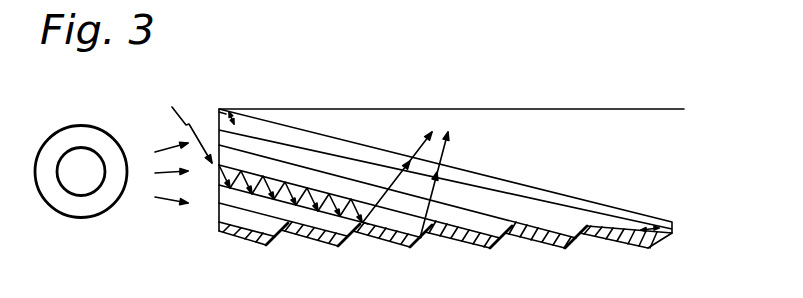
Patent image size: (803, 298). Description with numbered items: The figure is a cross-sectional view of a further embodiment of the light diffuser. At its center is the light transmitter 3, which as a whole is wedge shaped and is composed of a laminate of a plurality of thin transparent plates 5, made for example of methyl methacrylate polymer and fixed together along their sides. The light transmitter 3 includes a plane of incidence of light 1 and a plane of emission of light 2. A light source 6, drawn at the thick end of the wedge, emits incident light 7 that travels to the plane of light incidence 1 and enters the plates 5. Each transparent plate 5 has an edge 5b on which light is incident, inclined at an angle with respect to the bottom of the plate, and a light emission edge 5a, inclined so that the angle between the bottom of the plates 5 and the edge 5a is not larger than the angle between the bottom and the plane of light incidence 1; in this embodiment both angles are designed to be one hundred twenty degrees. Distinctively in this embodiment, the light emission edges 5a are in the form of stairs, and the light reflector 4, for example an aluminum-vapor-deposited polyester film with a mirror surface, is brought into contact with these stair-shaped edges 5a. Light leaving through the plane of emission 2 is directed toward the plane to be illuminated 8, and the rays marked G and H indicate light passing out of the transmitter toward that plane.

The plane of incidence of light 1 is at (186, 125).
The plane of emission of light 2 is at (608, 105).
The light transmitter 3 is at (372, 137).
The reflector 4 is at (542, 240).
The transparent plate 5 is at (298, 226).
The light emission edge 5a is at (355, 236).
The light incidence edge 5b is at (218, 117).
The light source 6 is at (80, 218).
The incident light 7 is at (172, 172).
The plane to be illuminated 8 is at (578, 107).
The emitted light ray G is at (418, 143).
The emitted light ray H is at (450, 140).